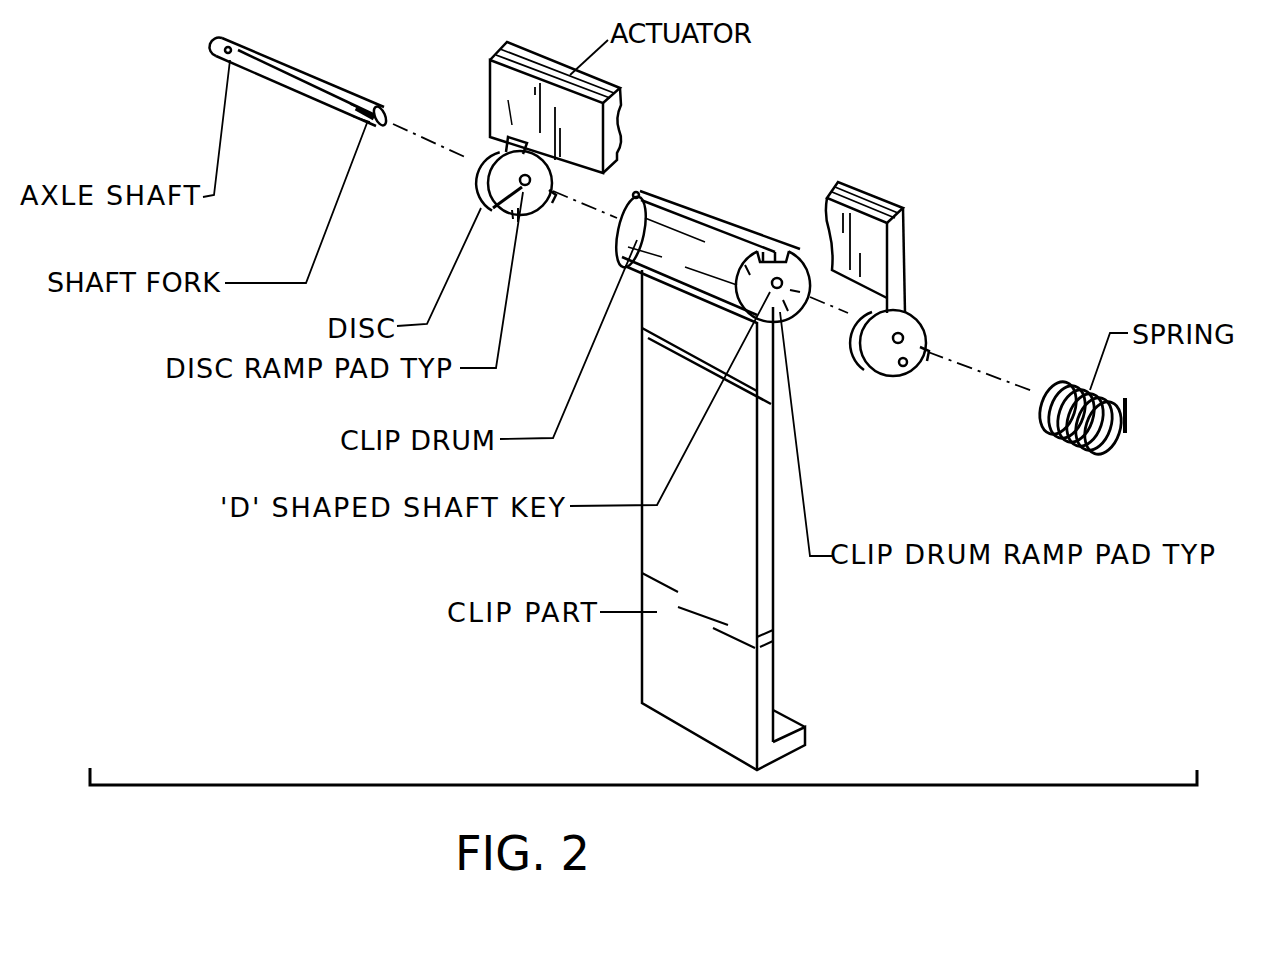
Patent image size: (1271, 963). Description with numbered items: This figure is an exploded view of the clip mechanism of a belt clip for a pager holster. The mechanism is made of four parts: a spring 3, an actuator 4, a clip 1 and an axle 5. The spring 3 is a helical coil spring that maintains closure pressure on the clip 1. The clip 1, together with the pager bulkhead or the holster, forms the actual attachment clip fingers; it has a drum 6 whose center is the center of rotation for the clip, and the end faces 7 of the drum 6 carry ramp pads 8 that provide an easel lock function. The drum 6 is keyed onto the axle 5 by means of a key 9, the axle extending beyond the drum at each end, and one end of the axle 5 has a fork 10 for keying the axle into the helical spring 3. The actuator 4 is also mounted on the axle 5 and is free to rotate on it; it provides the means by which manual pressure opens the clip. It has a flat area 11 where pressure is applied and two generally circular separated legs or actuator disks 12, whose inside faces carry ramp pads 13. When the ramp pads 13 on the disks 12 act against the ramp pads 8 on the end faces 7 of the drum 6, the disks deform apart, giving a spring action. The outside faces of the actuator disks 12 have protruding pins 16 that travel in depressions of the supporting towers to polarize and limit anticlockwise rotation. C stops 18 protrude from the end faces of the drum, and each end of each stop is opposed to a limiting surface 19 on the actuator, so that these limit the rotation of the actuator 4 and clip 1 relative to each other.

The clip 1 is at (657, 538).
The spring 3 is at (1093, 452).
The actuator 4 is at (613, 127).
The axle 5 is at (283, 70).
The drum 6 is at (680, 198).
The end faces 7 is at (745, 270).
The ramp pads 8 is at (781, 307).
The key 9 is at (757, 322).
The fork 10 is at (388, 115).
The flat area 11 is at (510, 100).
The actuator disks 12 is at (472, 180).
The ramp pads 13 is at (517, 212).
The protruding pins 16 is at (906, 368).
The C stops 18 is at (800, 250).
The limiting surface 19 is at (906, 292).